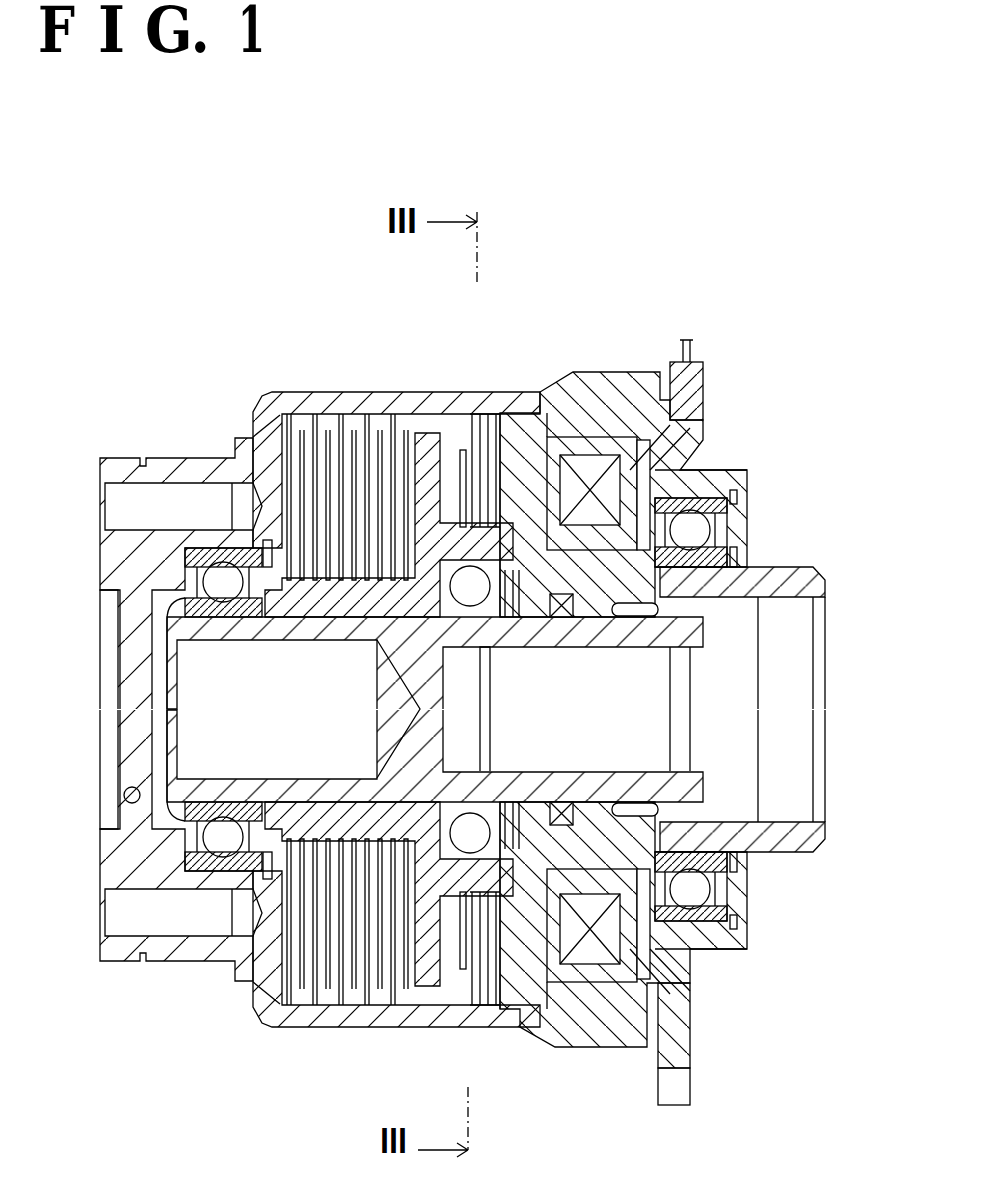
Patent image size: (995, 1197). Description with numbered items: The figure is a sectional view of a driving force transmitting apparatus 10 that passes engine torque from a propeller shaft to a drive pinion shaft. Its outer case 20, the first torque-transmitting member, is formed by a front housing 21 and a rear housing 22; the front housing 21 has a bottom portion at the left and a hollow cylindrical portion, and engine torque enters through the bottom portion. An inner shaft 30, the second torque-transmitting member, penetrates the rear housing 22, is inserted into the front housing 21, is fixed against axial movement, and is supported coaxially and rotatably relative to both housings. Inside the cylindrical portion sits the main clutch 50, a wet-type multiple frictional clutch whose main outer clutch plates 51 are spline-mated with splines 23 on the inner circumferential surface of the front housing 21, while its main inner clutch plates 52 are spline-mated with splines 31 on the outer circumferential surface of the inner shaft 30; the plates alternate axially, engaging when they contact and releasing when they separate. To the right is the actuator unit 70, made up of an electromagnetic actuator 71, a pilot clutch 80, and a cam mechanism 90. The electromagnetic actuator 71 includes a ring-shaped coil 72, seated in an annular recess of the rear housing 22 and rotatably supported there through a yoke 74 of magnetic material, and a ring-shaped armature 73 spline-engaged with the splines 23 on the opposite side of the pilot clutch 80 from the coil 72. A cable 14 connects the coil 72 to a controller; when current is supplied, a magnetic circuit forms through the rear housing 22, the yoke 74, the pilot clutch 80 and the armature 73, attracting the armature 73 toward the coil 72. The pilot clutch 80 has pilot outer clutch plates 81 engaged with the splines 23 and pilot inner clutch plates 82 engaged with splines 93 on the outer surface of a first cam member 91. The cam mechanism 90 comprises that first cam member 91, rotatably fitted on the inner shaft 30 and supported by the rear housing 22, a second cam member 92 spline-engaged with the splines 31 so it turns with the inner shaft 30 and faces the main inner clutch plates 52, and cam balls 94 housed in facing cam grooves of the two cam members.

The driving force transmitting apparatus 10 is at (361, 288).
The cable 14 is at (693, 343).
The outer case 20 is at (276, 720).
The front housing 21 is at (113, 962).
The rear housing 22 is at (785, 852).
The splines 23 is at (253, 407).
The inner shaft 30 is at (163, 683).
The splines 31 is at (190, 585).
The main clutch 50 is at (213, 686).
The main outer clutch plates 51 is at (297, 1003).
The main inner clutch plates 52 is at (290, 893).
The actuator unit 70 is at (621, 681).
The electromagnetic actuator 71 is at (602, 437).
The coil 72 is at (687, 470).
The armature 73 is at (447, 410).
The yoke 74 is at (707, 955).
The pilot clutch 80 is at (485, 697).
The pilot outer clutch plates 81 is at (460, 990).
The pilot inner clutch plates 82 is at (503, 1000).
The cam mechanism 90 is at (435, 713).
The first cam member 91 is at (530, 740).
The second cam member 92 is at (420, 815).
The splines 93 is at (440, 420).
The cam balls 94 is at (470, 827).